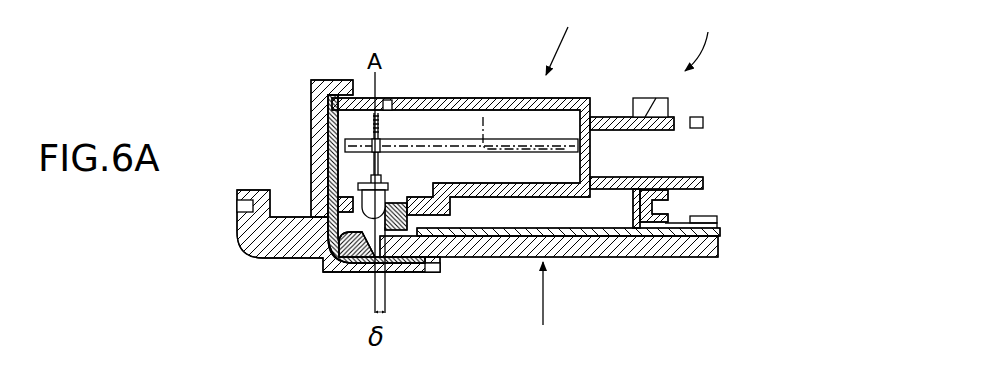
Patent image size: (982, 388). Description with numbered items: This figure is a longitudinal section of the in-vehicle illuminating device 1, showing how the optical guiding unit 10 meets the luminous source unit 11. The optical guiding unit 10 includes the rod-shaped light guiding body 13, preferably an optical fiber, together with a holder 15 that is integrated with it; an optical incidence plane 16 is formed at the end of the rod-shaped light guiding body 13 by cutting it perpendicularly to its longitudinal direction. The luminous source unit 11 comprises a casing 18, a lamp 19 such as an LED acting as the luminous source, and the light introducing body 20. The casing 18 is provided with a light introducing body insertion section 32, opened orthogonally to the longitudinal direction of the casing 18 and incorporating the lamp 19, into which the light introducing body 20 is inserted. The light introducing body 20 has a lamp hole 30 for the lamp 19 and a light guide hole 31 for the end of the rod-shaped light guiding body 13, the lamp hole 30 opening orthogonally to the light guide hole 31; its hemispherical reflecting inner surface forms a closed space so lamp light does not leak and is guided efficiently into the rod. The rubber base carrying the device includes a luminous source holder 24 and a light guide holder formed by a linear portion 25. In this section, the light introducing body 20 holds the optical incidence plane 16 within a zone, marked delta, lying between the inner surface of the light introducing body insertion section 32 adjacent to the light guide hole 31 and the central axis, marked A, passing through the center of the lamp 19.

The imaging apparatus 1 is at (699, 38).
The optical guiding unit 10 is at (546, 308).
The luminous source unit 11 is at (565, 38).
The rod-shaped light guiding body 13 is at (610, 249).
The holder 15 is at (691, 233).
The optical incidence plane 16 is at (372, 256).
The casing 18 is at (377, 252).
The lamp 19 is at (380, 200).
The light introducing body 20 is at (333, 262).
The luminous source holder 24 is at (318, 108).
The linear portion 25 is at (263, 249).
The lamp hole 30 is at (332, 181).
The light guide hole 31 is at (423, 271).
The light introducing body insertion section 32 is at (413, 186).